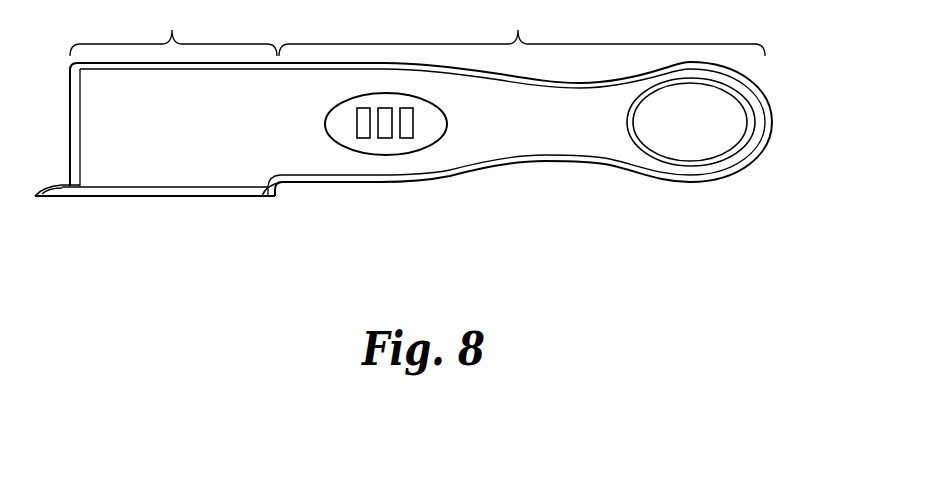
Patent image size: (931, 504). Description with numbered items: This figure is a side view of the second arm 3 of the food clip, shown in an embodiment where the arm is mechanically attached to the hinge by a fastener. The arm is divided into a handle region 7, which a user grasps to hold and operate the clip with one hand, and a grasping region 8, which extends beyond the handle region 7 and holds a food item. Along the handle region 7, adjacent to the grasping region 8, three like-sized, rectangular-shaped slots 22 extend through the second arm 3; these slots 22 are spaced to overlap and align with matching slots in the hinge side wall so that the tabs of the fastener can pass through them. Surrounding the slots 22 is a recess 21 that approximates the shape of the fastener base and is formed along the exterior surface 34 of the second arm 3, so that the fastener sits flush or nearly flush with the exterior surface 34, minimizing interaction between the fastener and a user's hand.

The second arm 3 is at (547, 160).
The handle region 7 is at (522, 29).
The grasping region 8 is at (173, 29).
The recess 21 is at (407, 138).
The slots 22 is at (402, 138).
The exterior surface 34 is at (700, 122).